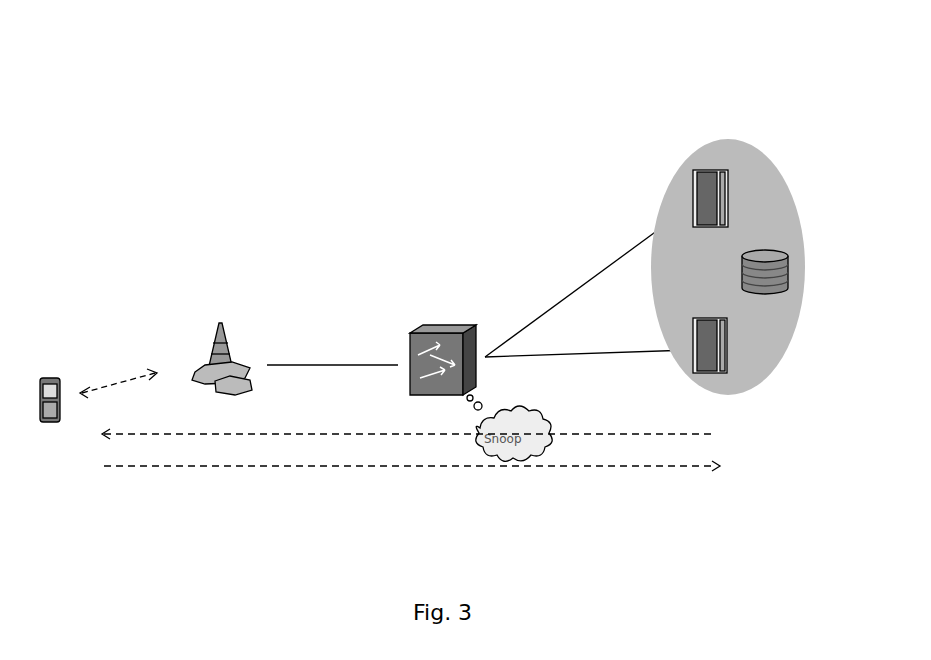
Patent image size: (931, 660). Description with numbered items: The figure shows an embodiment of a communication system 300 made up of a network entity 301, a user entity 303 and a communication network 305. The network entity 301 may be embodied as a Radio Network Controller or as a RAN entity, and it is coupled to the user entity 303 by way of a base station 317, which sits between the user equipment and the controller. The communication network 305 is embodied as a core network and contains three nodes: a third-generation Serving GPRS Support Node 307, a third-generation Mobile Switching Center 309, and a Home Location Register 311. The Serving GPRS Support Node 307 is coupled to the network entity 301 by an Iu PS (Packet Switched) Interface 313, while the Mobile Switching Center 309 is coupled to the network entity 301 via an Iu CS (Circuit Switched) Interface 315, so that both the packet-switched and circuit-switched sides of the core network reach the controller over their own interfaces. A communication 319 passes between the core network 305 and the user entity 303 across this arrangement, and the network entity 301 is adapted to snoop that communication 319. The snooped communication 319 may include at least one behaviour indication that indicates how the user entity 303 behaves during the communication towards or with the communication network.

The communication system 300 is at (453, 134).
The network entity 301 is at (432, 323).
The user entity 303 is at (55, 367).
The communication network 305 is at (668, 293).
The 3G Serving GPRS Support Node 307 is at (712, 163).
The 3G Mobile Switching Center 309 is at (732, 357).
The Home Location Register 311 is at (775, 240).
The Iu PS Interface 313 is at (605, 250).
The Iu CS Interface 315 is at (572, 367).
The base station 317 is at (240, 291).
The communication 319 is at (238, 472).